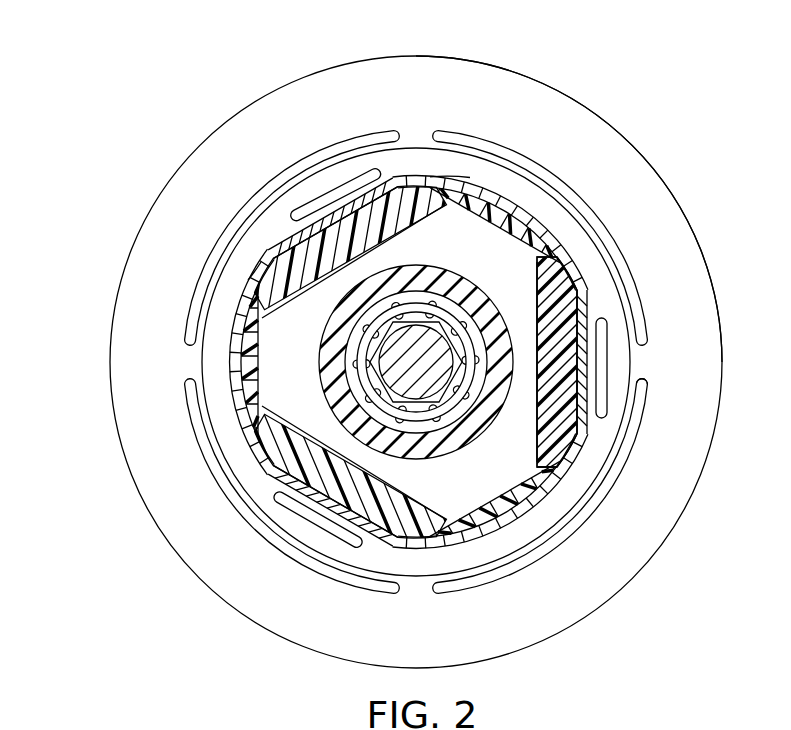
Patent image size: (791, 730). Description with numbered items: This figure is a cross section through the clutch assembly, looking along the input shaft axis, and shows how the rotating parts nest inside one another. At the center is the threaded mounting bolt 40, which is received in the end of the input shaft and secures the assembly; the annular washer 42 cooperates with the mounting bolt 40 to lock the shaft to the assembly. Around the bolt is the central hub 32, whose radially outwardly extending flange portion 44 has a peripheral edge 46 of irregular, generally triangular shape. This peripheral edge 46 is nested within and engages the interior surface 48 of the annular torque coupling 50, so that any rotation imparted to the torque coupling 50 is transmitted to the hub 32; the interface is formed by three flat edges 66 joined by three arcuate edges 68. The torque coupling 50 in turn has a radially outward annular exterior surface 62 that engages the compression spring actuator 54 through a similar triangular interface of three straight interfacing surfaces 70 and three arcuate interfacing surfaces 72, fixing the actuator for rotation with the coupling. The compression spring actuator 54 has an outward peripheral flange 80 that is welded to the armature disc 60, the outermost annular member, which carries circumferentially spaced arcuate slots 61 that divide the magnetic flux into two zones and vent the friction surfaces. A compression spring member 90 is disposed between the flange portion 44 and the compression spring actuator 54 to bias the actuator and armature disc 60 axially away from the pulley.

The central hub 32 is at (673, 193).
The threaded mounting bolt 40 is at (423, 383).
The annular washer 42 is at (422, 310).
The flange portion 44 is at (520, 325).
The peripheral edge 46 is at (642, 390).
The interior surface 48 is at (572, 460).
The torque coupling 50 is at (335, 485).
The compression spring actuator 54 is at (453, 187).
The armature disc 60 is at (638, 172).
The arcuate slots 61 is at (203, 272).
The annular exterior surface 62 is at (573, 430).
The flat edges 66 is at (347, 262).
The arcuate edges 68 is at (522, 250).
The straight interfacing surfaces 70 is at (400, 187).
The arcuate interfacing surfaces 72 is at (495, 200).
The peripheral flange 80 is at (408, 157).
The compression spring member 90 is at (270, 270).